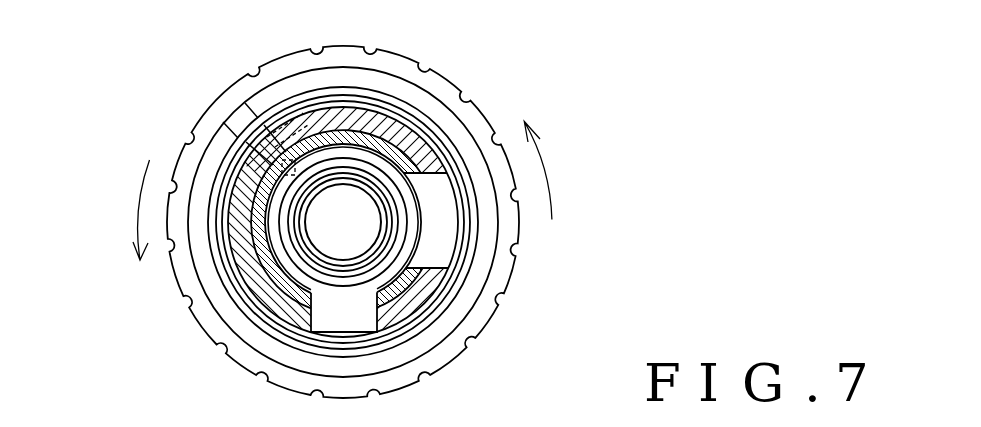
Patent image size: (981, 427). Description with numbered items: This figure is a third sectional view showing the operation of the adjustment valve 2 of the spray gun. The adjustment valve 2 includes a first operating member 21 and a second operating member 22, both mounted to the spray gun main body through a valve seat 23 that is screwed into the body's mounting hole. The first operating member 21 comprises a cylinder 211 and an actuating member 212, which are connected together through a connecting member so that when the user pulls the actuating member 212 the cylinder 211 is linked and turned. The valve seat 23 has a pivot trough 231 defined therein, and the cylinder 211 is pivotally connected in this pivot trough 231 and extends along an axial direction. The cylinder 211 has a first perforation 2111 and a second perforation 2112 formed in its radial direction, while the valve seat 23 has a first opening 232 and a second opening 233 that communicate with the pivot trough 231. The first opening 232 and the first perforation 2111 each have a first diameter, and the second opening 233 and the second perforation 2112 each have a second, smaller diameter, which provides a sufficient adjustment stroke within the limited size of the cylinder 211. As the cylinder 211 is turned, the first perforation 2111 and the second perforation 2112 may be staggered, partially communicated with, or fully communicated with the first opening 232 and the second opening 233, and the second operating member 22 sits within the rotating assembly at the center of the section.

The adjustment valve 2 is at (130, 13).
The first operating member 21 is at (187, 32).
The cylinder 211 is at (280, 142).
The actuating member 212 is at (221, 117).
The first perforation 2111 is at (425, 243).
The second perforation 2112 is at (363, 302).
The second operating member 22 is at (322, 227).
The valve seat 23 is at (296, 301).
The pivot trough 231 is at (254, 244).
The first opening 232 is at (447, 215).
The second opening 233 is at (348, 327).